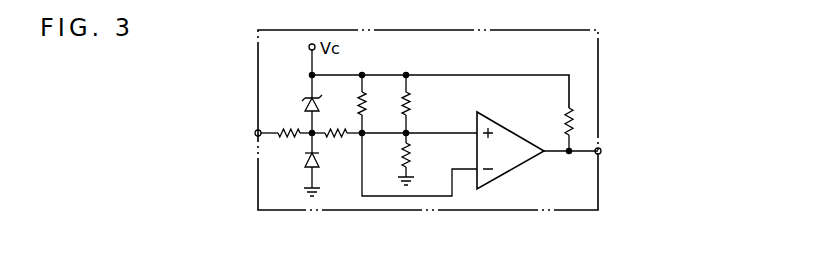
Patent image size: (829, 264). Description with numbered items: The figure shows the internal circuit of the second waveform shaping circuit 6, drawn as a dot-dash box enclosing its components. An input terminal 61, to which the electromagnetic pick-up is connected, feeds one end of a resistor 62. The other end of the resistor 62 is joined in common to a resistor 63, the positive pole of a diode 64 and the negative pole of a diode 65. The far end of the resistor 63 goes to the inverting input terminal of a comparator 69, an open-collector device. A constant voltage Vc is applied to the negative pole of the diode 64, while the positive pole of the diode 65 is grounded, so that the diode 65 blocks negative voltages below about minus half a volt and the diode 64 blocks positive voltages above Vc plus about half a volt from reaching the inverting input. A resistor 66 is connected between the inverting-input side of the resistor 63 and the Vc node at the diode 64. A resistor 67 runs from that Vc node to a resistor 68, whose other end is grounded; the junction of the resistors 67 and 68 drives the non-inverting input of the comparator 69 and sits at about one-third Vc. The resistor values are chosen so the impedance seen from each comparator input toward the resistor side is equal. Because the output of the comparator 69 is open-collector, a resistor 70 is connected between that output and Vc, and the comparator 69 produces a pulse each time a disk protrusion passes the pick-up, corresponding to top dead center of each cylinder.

The second waveform shaping circuit 6 is at (464, 30).
The input terminal 61 is at (255, 133).
The resistor 62 is at (297, 138).
The resistor 63 is at (329, 138).
The diode 64 is at (306, 108).
The diode 65 is at (305, 171).
The resistor 66 is at (378, 116).
The resistor 67 is at (422, 116).
The resistor 68 is at (423, 164).
The comparator 69 is at (528, 159).
The resistor 70 is at (565, 116).